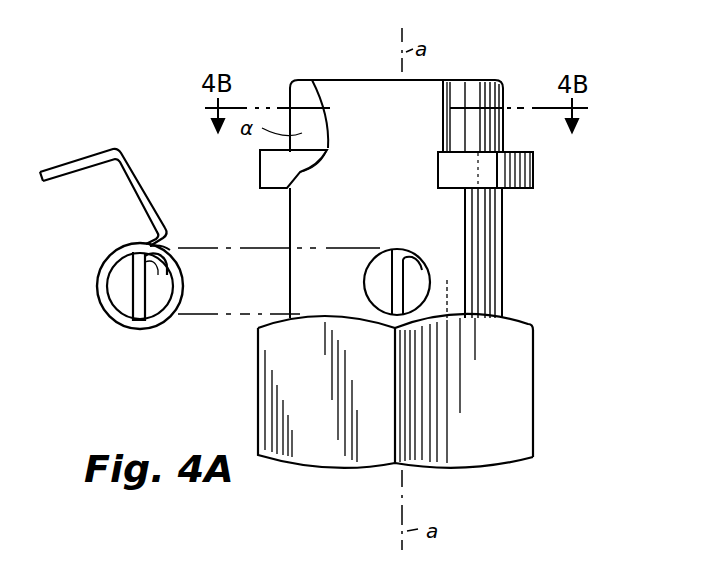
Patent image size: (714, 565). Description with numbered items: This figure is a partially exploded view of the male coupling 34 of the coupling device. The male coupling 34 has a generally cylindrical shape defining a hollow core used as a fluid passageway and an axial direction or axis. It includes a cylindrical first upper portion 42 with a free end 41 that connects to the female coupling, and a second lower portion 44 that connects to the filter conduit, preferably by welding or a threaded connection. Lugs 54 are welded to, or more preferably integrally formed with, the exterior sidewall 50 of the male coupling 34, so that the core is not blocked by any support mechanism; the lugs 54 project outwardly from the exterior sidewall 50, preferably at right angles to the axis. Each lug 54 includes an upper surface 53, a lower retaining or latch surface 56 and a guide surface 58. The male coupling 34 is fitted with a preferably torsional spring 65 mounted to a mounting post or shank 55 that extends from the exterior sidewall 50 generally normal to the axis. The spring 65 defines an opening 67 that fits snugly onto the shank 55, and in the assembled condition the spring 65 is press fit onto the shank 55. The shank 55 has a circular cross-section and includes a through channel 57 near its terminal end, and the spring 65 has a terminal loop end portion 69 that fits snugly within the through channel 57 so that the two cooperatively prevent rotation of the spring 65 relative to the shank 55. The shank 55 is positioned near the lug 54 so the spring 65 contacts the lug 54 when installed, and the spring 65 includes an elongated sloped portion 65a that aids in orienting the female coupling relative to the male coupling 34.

The male coupling 34 is at (520, 263).
The free end 41 is at (357, 80).
The first upper portion 42 is at (427, 97).
The second lower portion 44 is at (523, 380).
The exterior sidewall 50 is at (411, 136).
The upper surface 53 is at (500, 151).
The lugs 54 is at (327, 147).
The shank 55 is at (417, 267).
The latch surface 56 is at (468, 192).
The through channel 57 is at (397, 275).
The guide surface 58 is at (440, 172).
The spring 65 is at (132, 328).
The elongated sloped portion 65a is at (134, 156).
The opening 67 is at (118, 282).
The terminal loop end portion 69 is at (145, 288).